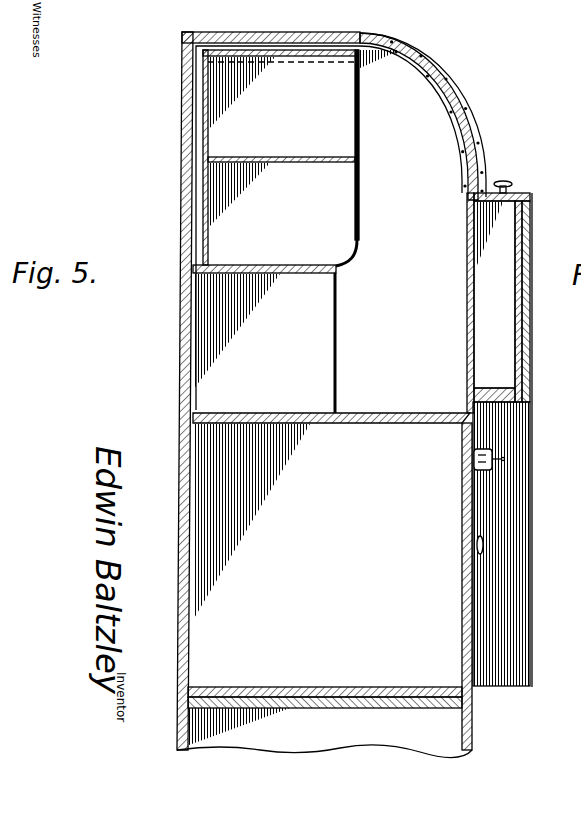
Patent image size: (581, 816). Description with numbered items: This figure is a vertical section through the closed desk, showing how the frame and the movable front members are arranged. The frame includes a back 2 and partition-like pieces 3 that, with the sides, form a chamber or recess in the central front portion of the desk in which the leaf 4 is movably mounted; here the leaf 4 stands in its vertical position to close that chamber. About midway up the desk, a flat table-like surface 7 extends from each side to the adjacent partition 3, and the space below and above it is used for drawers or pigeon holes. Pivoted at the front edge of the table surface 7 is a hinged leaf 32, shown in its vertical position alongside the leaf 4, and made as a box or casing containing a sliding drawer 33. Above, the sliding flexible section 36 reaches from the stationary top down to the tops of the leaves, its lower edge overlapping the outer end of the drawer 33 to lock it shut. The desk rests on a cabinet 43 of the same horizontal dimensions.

The back 2 is at (178, 510).
The partition-like piece 3 is at (264, 339).
The leaf 4 is at (534, 548).
The table-like surface 7 is at (405, 412).
The hinged leaf 32 is at (470, 286).
The sliding drawer 33 is at (493, 323).
The sliding flexible section 36 is at (476, 142).
The cabinet 43 is at (485, 729).